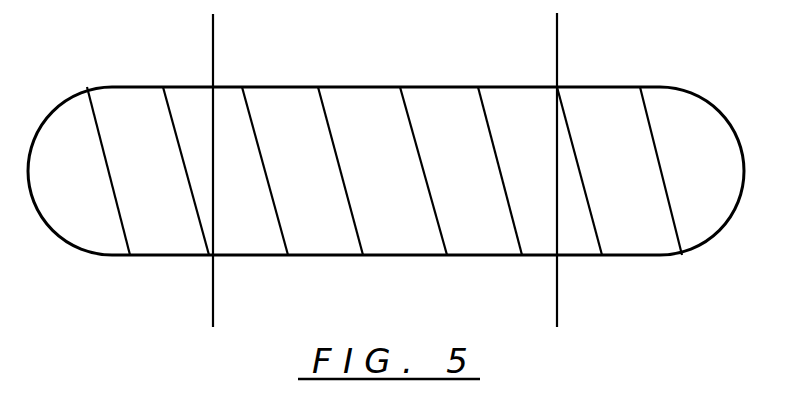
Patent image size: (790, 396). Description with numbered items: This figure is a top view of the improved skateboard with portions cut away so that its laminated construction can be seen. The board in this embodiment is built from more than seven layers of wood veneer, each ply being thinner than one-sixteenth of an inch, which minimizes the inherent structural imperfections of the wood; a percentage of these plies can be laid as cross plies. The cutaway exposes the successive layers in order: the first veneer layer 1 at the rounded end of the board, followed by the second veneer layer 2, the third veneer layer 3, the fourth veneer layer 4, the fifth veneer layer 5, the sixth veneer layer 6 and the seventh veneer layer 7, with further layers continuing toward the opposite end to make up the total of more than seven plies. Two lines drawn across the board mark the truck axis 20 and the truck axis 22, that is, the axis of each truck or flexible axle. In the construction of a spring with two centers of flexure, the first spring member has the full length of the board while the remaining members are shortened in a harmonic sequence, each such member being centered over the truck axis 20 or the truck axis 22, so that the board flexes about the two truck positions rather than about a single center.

The first veneer layer 1 is at (68, 113).
The second veneer layer 2 is at (125, 103).
The third veneer layer 3 is at (195, 105).
The fourth veneer layer 4 is at (283, 105).
The fifth veneer layer 5 is at (358, 105).
The sixth veneer layer 6 is at (437, 105).
The seventh veneer layer 7 is at (517, 107).
The truck axis 20 is at (213, 25).
The truck axis 22 is at (557, 24).